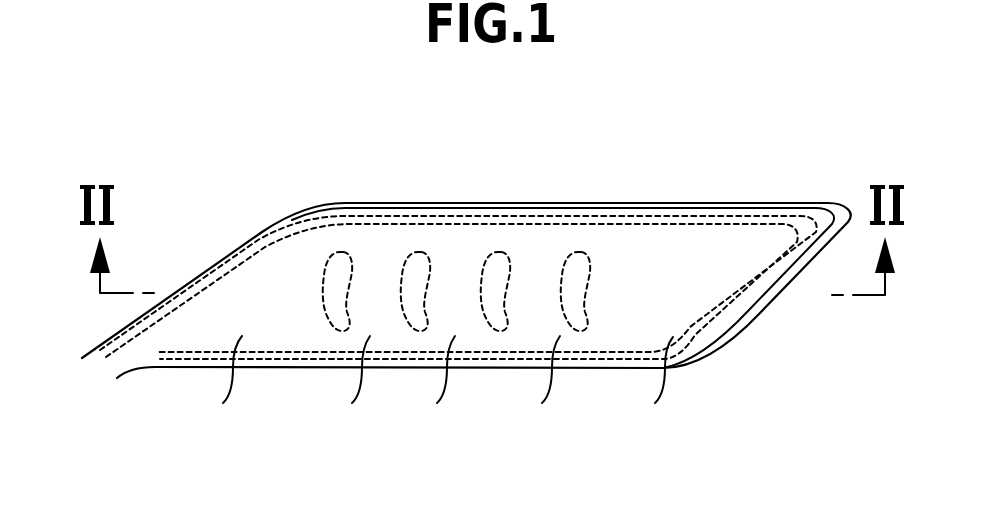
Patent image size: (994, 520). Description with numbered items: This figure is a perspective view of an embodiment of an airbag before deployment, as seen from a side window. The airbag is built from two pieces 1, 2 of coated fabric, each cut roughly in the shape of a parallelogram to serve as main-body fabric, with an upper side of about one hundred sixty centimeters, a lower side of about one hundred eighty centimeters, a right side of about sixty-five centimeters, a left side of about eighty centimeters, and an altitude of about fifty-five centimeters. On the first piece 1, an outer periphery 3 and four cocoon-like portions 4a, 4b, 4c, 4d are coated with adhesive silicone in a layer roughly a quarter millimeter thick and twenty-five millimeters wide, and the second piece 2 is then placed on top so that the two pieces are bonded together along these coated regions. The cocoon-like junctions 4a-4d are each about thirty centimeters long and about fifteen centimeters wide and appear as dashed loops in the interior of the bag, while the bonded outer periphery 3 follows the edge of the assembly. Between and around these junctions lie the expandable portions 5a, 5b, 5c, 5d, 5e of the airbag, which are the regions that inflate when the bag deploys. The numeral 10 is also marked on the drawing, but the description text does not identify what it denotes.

The first piece 1 is at (735, 209).
The second piece 2 is at (636, 203).
The outer periphery 3 is at (735, 298).
The cocoon-like portion 4a is at (345, 313).
The cocoon-like portion 4b is at (423, 313).
The cocoon-like portion 4c is at (503, 313).
The cocoon-like portion 4d is at (583, 313).
The expandable portion 5a is at (221, 386).
The expandable portion 5b is at (349, 387).
The expandable portion 5c is at (436, 388).
The expandable portion 5d is at (540, 388).
The expandable portion 5e is at (655, 389).
The air belt device 10 is at (106, 362).